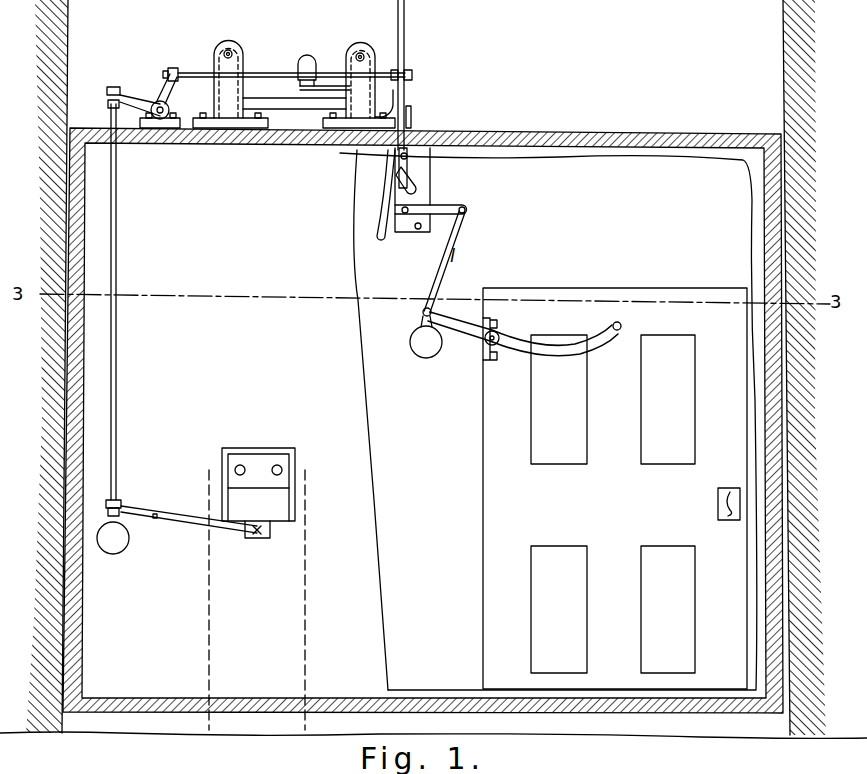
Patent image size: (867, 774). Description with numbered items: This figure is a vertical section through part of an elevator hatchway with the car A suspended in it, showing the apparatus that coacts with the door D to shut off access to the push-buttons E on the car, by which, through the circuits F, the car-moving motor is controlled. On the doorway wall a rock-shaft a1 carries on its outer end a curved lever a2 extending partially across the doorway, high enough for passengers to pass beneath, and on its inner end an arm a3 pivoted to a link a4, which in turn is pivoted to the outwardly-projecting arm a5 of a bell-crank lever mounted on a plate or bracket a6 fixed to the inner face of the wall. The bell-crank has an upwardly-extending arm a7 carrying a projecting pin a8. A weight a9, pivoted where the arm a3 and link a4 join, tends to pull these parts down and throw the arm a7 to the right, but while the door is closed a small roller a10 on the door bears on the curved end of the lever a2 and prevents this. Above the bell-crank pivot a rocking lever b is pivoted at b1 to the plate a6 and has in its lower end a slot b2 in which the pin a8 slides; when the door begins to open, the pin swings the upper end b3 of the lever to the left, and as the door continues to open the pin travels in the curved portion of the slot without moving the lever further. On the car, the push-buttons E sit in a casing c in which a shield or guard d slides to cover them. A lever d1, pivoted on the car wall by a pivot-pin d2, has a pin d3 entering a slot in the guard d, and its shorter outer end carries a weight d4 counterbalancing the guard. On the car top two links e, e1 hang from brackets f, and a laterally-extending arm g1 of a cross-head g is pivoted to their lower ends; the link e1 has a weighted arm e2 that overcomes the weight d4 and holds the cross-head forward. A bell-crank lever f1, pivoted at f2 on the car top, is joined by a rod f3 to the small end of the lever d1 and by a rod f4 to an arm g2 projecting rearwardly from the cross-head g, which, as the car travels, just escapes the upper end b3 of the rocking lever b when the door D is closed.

The car A is at (672, 133).
The door D is at (615, 488).
The push-buttons E is at (276, 463).
The circuit F is at (208, 600).
The rock-shaft a1 is at (498, 334).
The curved lever a2 is at (556, 358).
The arm or lever a3 is at (478, 340).
The link a4 is at (440, 290).
The outwardly-projecting arm of bell-crank lever a5 is at (460, 216).
The plate or bracket a6 is at (407, 234).
The upwardly-extending arm of bell-crank lever a7 is at (390, 197).
The projecting pin a8 is at (388, 168).
The weight a9 is at (412, 340).
The roller a10 is at (622, 326).
The rocking lever b is at (412, 165).
The pivot b1 is at (408, 146).
The slot b2 is at (418, 185).
The upper end of rocking lever b3 is at (412, 108).
The casing c is at (294, 470).
The shield or guard d is at (258, 502).
The lever d1 is at (189, 508).
The pivot-pin d2 is at (156, 520).
The pin d3 is at (257, 540).
The weight d4 is at (115, 552).
The link e is at (212, 62).
The link e1 is at (386, 58).
The weighted arm e2 is at (304, 63).
The bracket f is at (230, 120).
The bell-crank lever f1 is at (163, 74).
The pivot f2 is at (165, 122).
The link or rod f3 is at (118, 328).
The link or rod f4 is at (262, 72).
The cross-head g is at (405, 28).
The laterally-extending arm g1 is at (302, 108).
The arm g2 is at (412, 78).